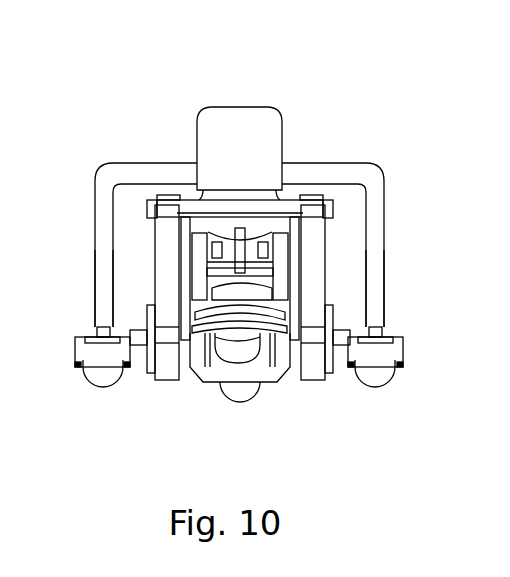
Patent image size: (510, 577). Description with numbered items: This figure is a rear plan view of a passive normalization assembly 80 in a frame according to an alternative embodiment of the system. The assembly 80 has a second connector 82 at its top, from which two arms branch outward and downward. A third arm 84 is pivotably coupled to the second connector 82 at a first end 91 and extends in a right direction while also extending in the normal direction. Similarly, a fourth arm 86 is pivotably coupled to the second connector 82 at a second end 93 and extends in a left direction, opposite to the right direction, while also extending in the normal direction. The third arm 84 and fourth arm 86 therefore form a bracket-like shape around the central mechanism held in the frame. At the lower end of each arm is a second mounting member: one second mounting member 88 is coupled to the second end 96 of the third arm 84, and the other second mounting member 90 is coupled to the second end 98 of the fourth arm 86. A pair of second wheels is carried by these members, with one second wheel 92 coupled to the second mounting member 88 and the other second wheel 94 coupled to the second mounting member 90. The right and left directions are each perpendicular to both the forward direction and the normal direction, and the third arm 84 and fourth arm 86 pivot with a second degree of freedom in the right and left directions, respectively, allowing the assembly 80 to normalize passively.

The assembly 80 is at (104, 80).
The second connector 82 is at (239, 148).
The third arm 84 is at (372, 168).
The fourth arm 86 is at (107, 175).
The second mounting member 88 is at (402, 347).
The second mounting member 90 is at (82, 353).
The first end 91 is at (290, 170).
The second wheel 92 is at (373, 380).
The second end 93 is at (183, 170).
The second wheel 94 is at (105, 380).
The second end 96 is at (382, 297).
The second end 98 is at (100, 305).